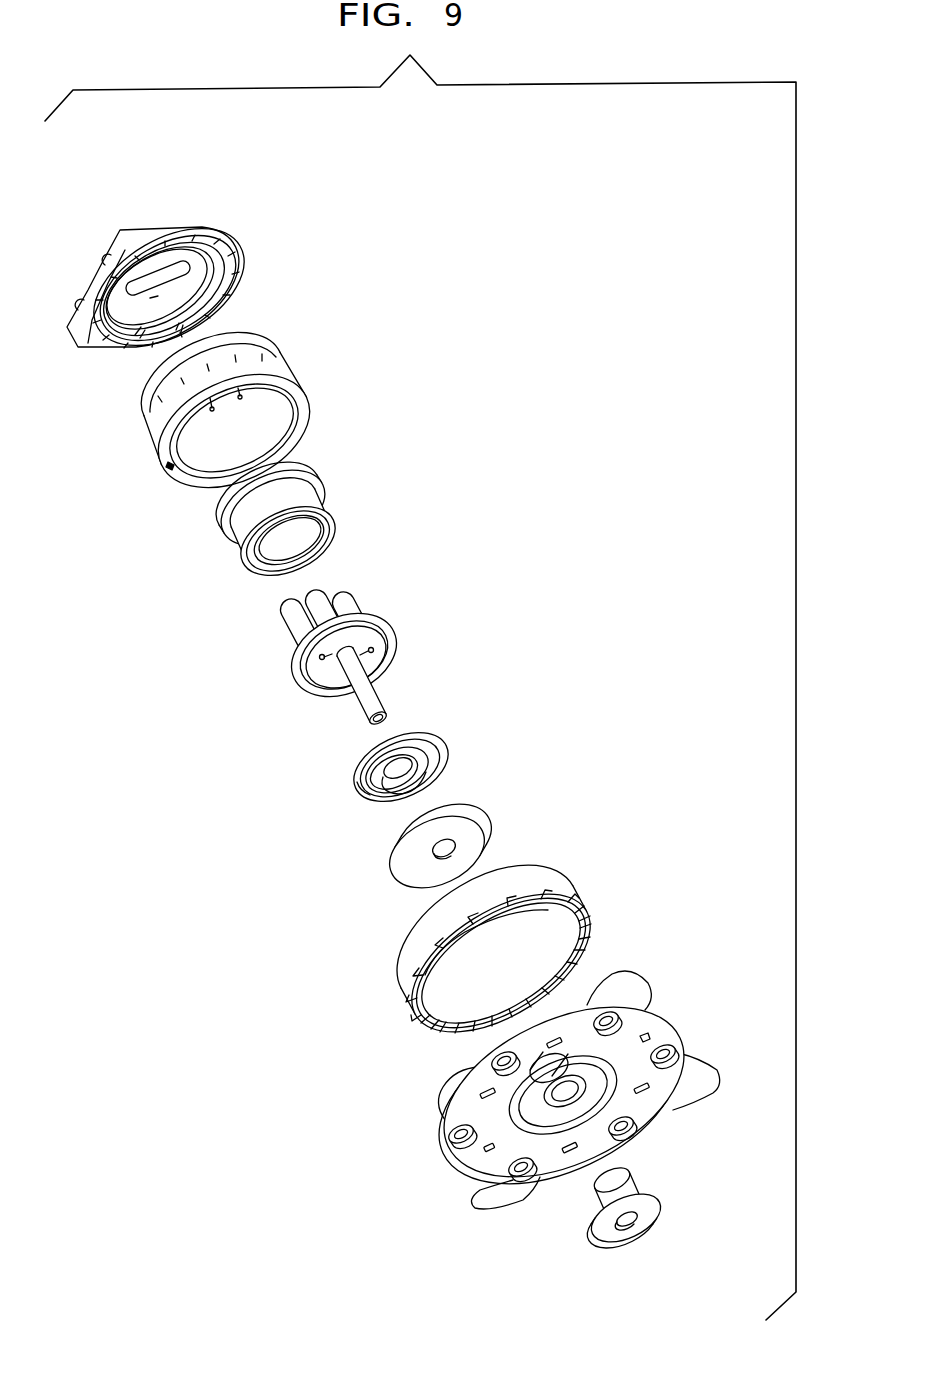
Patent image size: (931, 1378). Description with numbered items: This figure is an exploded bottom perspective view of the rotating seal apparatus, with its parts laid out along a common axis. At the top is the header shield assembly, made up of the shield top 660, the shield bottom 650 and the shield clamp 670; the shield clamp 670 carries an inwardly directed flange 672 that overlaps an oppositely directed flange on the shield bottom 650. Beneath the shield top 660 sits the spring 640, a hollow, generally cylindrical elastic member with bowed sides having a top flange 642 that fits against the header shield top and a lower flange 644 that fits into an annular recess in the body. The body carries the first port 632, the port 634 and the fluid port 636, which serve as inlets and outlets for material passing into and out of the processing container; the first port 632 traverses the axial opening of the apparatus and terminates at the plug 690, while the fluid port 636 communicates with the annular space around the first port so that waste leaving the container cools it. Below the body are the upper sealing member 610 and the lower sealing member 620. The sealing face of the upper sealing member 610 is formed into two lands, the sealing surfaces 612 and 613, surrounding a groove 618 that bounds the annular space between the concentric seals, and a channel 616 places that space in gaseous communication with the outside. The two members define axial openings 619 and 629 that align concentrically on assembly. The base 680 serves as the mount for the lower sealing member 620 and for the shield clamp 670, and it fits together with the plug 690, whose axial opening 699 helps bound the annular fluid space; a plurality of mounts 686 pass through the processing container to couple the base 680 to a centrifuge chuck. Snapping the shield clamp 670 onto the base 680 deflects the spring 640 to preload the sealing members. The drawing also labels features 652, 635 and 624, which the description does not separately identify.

The shield top 660 is at (273, 230).
The shield bottom 650 is at (265, 410).
The flange 652 is at (308, 388).
The spring 640 is at (332, 515).
The top flange 642 is at (312, 474).
The lower flange 644 is at (335, 528).
The first port 632 is at (322, 590).
The port 634 is at (348, 590).
The fluid port 636 is at (288, 594).
The shaft disc 635 is at (380, 652).
The upper sealing member 610 is at (420, 760).
The sealing surface 612 is at (367, 793).
The sealing surface 613 is at (445, 753).
The groove 618 is at (432, 762).
The channel 616 is at (424, 778).
The axial opening 619 is at (386, 776).
The lower sealing member 620 is at (445, 870).
The disc 624 is at (413, 873).
The axial opening 629 is at (449, 852).
The shield clamp 670 is at (529, 947).
The inwardly directed flange 672 is at (548, 940).
The base 680 is at (590, 1081).
The mounts 686 is at (682, 1062).
The plug 690 is at (640, 1148).
The axial opening 699 is at (633, 1223).